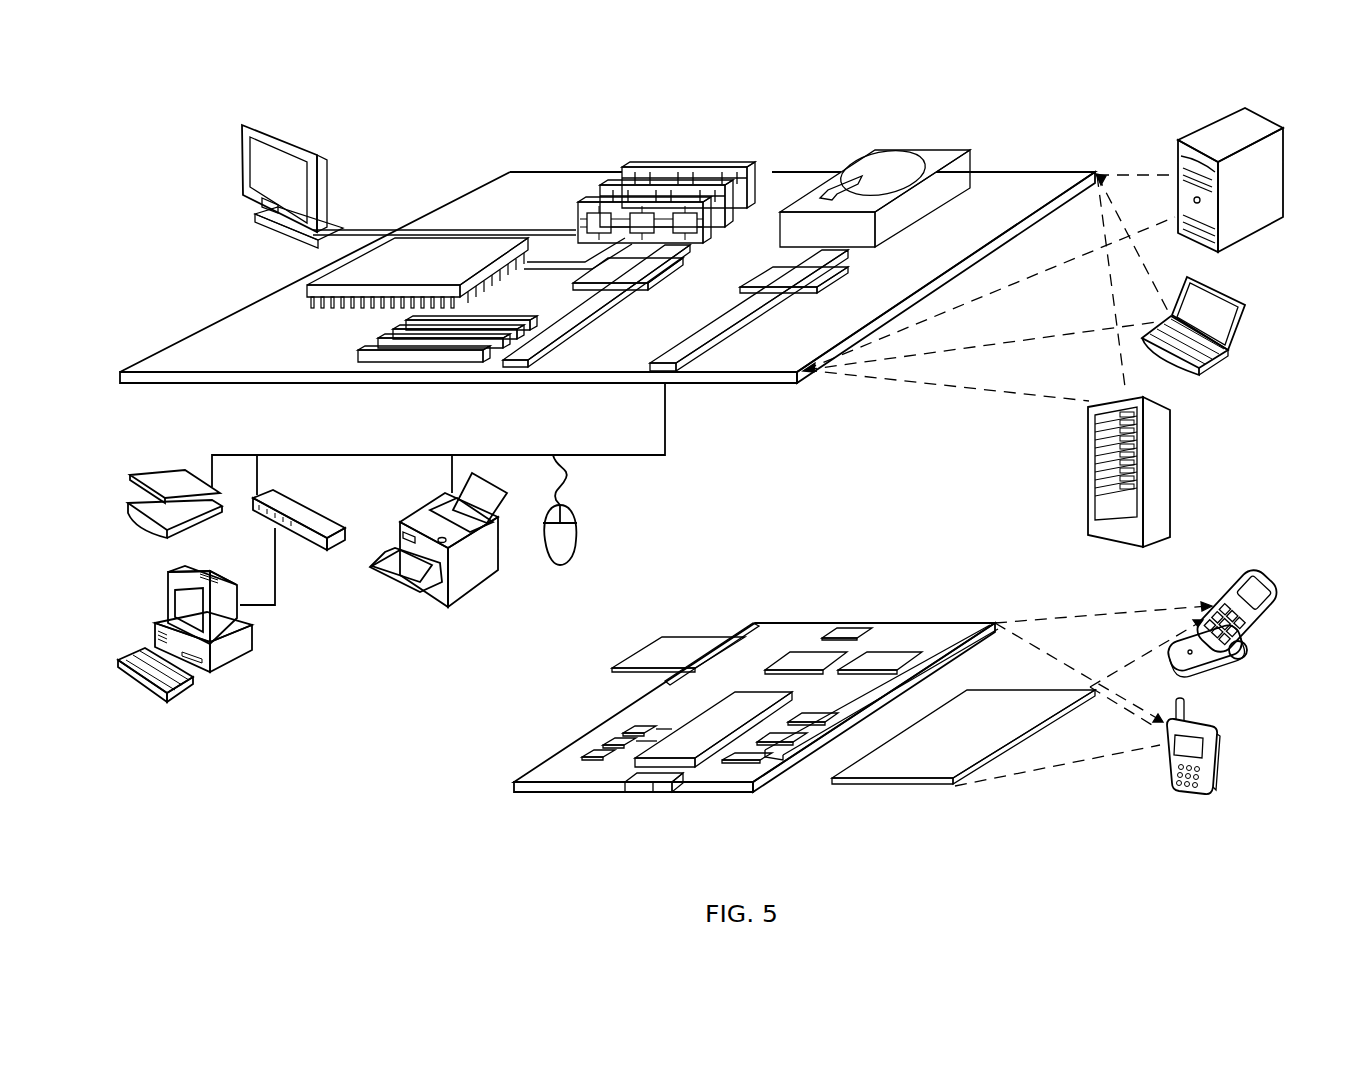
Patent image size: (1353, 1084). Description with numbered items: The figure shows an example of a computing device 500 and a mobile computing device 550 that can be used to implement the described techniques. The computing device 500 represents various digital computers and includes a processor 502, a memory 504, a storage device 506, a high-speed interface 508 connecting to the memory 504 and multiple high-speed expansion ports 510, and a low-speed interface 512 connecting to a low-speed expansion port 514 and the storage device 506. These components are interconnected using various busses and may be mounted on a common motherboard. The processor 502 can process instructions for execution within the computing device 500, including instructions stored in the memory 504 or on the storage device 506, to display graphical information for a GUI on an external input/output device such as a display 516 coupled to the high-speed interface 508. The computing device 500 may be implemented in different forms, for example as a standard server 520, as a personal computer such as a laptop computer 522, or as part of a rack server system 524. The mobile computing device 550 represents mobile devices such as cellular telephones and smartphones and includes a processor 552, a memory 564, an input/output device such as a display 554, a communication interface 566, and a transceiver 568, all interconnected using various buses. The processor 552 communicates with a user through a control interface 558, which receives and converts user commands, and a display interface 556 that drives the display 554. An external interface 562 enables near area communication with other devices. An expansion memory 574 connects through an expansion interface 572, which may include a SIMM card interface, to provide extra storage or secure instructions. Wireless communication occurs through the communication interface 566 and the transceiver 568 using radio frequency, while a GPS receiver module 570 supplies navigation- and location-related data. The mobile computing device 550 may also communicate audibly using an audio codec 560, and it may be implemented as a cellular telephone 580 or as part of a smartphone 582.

The computing device 500 is at (436, 145).
The processor 502 is at (307, 288).
The memory 504 is at (637, 164).
The storage device 506 is at (873, 151).
The high-speed interface 508 is at (607, 272).
The high-speed expansion ports 510 is at (385, 343).
The low-speed interface 512 is at (777, 273).
The low-speed expansion port 514 is at (680, 372).
The display 516 is at (240, 122).
The standard server 520 is at (1178, 157).
The laptop computer 522 is at (1242, 305).
The rack server system 524 is at (1087, 495).
The mobile computing device 550 is at (485, 793).
The processor 552 is at (687, 750).
The display 554 is at (920, 768).
The display interface 556 is at (756, 758).
The control interface 558 is at (787, 736).
The audio codec 560 is at (812, 717).
The external interface 562 is at (653, 788).
The memory 564 is at (600, 744).
The communication interface 566 is at (805, 658).
The transceiver 568 is at (883, 658).
The GPS receiver module 570 is at (853, 632).
The expansion interface 572 is at (732, 637).
The expansion memory 574 is at (660, 637).
The cellular telephone 580 is at (1223, 580).
The smartphone 582 is at (1167, 757).